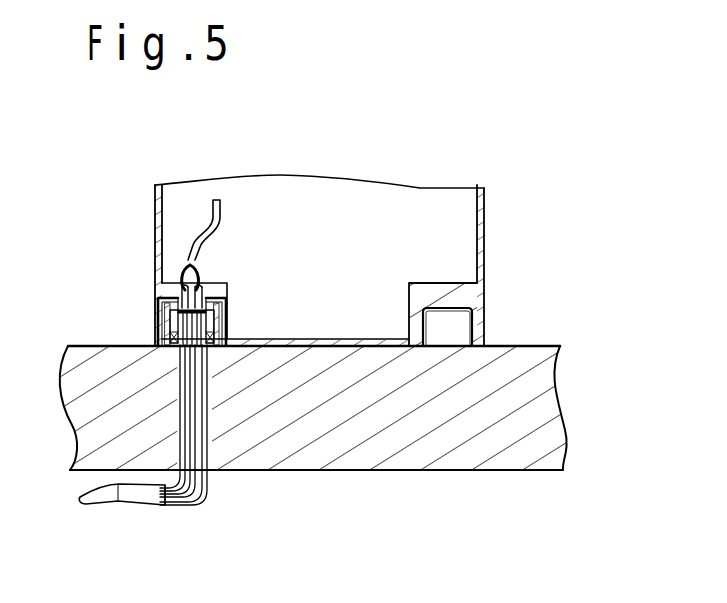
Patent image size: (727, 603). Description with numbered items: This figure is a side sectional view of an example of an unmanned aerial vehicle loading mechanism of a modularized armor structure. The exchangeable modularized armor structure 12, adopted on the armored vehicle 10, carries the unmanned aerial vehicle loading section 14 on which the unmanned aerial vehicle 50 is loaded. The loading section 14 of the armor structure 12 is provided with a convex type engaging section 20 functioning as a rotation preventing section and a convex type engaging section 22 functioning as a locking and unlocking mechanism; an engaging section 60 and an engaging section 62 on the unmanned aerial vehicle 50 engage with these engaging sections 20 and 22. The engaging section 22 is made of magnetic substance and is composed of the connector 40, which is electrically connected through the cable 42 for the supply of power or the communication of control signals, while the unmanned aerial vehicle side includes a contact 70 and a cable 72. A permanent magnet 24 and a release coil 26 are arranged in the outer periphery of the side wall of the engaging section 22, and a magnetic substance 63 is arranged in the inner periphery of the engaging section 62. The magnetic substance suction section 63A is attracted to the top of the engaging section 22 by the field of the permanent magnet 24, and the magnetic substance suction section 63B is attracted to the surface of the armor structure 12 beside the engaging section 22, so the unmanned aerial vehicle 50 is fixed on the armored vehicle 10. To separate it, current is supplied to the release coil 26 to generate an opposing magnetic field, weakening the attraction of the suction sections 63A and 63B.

The armored vehicle 10 is at (348, 511).
The modularized armor structure 12 is at (543, 387).
The unmanned aerial vehicle loading section 14 is at (516, 333).
The convex type engaging section 20 is at (452, 332).
The convex type engaging section 22 is at (227, 308).
The permanent magnet 24 is at (167, 322).
The release coil 26 is at (168, 338).
The connector 40 is at (207, 376).
The cable 42 is at (175, 500).
The unmanned aerial vehicle 50 is at (316, 243).
The engaging section 60 is at (478, 308).
The engaging section 62 is at (227, 331).
The magnetic substance 63 is at (247, 352).
The magnetic substance suction section 63A is at (199, 287).
The magnetic substance suction section 63B is at (220, 354).
The contact 70 is at (190, 295).
The cable 72 is at (191, 266).